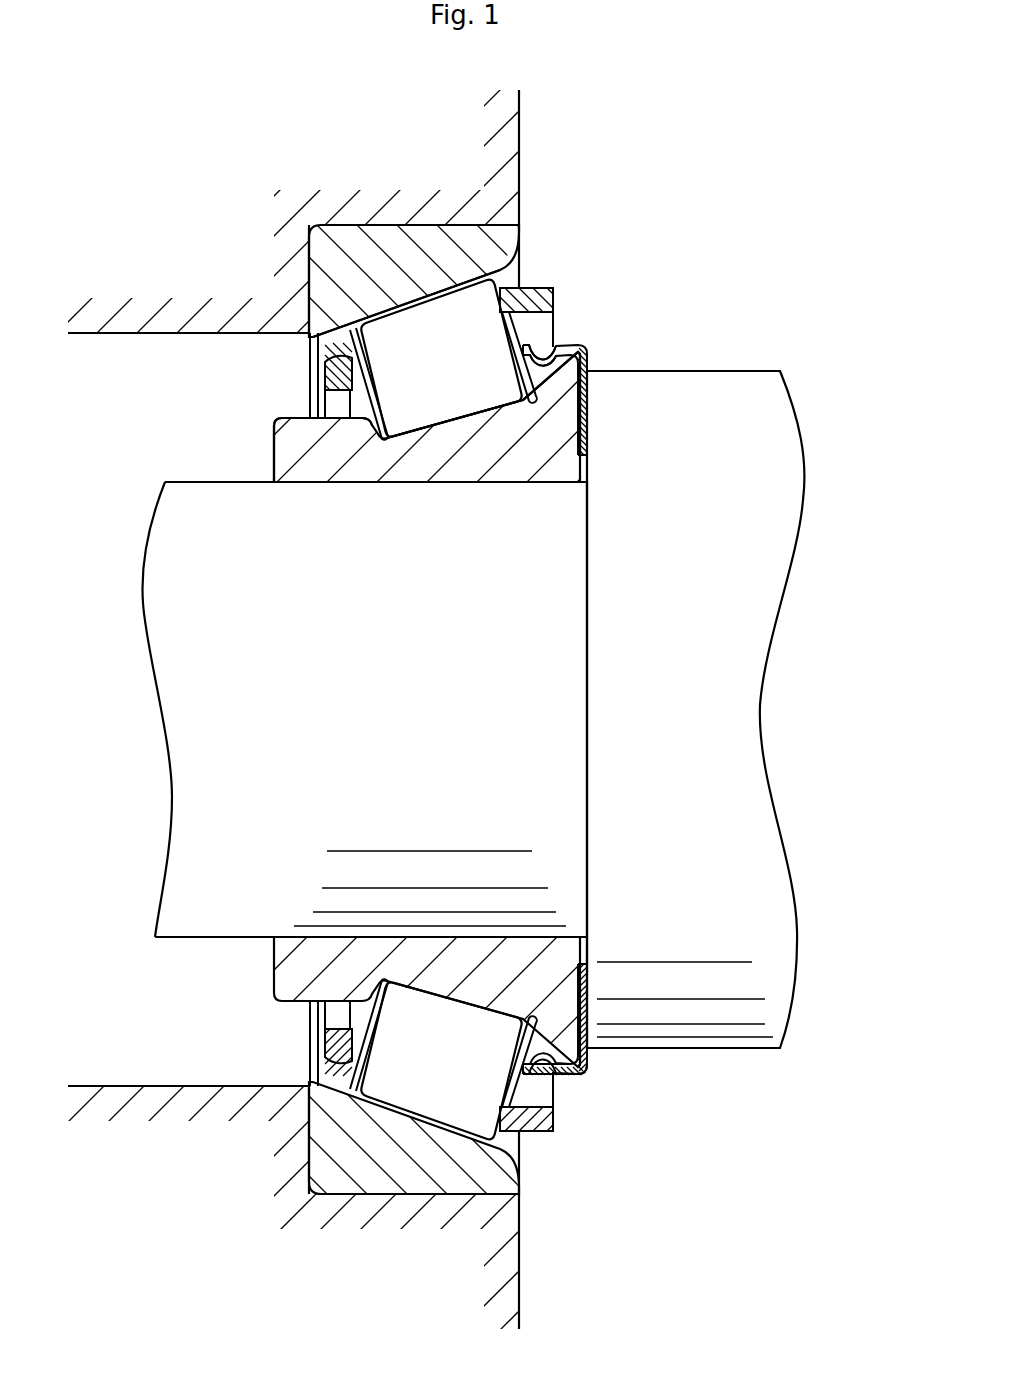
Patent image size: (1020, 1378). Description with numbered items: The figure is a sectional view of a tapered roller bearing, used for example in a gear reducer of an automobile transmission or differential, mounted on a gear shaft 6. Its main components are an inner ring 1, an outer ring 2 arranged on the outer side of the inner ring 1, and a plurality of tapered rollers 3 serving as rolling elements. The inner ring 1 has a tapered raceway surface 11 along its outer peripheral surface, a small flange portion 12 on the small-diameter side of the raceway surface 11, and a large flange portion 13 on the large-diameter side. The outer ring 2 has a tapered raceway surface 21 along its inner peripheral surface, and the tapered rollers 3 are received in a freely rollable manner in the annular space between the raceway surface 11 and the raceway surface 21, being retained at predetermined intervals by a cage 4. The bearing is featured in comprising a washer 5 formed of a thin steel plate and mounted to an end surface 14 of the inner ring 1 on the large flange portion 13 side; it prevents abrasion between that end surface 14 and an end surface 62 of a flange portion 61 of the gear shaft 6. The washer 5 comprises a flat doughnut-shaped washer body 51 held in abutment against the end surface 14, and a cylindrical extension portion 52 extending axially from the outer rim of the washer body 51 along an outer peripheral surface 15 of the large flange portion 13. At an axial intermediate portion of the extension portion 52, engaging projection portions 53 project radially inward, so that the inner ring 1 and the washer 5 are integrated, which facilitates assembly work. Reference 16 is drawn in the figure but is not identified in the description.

The inner ring 1 is at (268, 453).
The outer ring 2 is at (523, 239).
The tapered roller 3 is at (388, 352).
The cage 4 is at (540, 285).
The washer 5 is at (595, 388).
The gear shaft 6 is at (138, 598).
The raceway surface 11 is at (430, 418).
The small flange portion 12 is at (300, 432).
The large flange portion 13 is at (565, 403).
The end surface 14 is at (583, 1016).
The outer peripheral surface 15 is at (572, 1078).
The large rib face 16 is at (560, 363).
The raceway surface 21 is at (421, 300).
The washer body 51 is at (584, 441).
The extension portion 52 is at (540, 1090).
The engaging projection portion 53 is at (550, 345).
The flange portion 61 is at (760, 540).
The end surface 62 is at (582, 946).